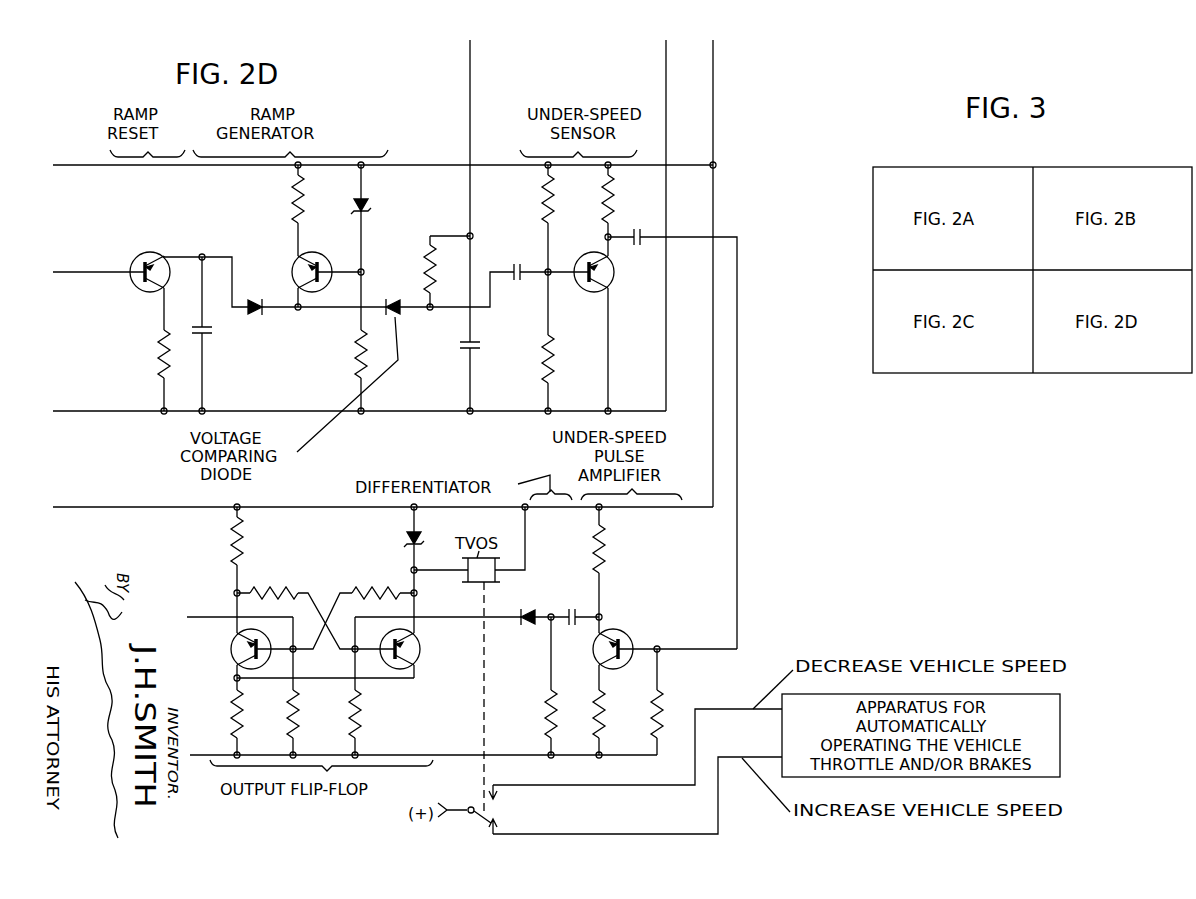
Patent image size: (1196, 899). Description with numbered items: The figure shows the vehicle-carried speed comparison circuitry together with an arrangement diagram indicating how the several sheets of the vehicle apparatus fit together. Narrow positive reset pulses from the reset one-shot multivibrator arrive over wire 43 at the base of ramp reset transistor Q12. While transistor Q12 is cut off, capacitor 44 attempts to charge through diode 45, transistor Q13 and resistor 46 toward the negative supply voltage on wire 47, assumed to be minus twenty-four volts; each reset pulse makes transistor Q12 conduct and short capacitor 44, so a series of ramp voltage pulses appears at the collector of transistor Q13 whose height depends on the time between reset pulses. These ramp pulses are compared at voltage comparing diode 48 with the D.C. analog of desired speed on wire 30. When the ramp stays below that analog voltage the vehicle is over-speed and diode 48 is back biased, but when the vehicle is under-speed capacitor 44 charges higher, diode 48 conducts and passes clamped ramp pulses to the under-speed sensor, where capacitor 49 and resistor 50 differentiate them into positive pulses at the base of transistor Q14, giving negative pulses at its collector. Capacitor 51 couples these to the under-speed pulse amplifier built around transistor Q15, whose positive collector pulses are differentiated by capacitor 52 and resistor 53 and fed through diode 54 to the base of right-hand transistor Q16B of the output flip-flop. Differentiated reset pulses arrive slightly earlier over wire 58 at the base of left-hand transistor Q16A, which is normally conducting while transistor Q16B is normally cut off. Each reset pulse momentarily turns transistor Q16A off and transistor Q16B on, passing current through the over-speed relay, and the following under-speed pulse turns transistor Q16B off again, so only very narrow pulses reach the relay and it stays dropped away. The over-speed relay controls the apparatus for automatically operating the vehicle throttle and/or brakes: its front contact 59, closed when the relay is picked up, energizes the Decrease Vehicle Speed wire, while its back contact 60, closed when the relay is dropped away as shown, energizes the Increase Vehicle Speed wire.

The wire 30 is at (471, 86).
The wire 43 is at (88, 272).
The capacitor 44 is at (212, 334).
The diode 45 is at (258, 296).
The resistor 46 is at (292, 206).
The wire 47 is at (249, 167).
The voltage comparing diode 48 is at (395, 296).
The capacitor 49 is at (517, 283).
The resistor 50 is at (552, 362).
The capacitor 51 is at (640, 248).
The capacitor 52 is at (580, 604).
The resistor 53 is at (550, 724).
The diode 54 is at (537, 610).
The wire 58 is at (207, 617).
The front contact 59 is at (506, 798).
The back contact 60 is at (506, 827).
The ramp reset transistor Q12 is at (136, 284).
The transistor Q13 is at (319, 253).
The transistor Q14 is at (611, 286).
The transistor Q15 is at (628, 635).
The left-hand transistor Q16A is at (232, 648).
The right-hand transistor Q16B is at (410, 668).